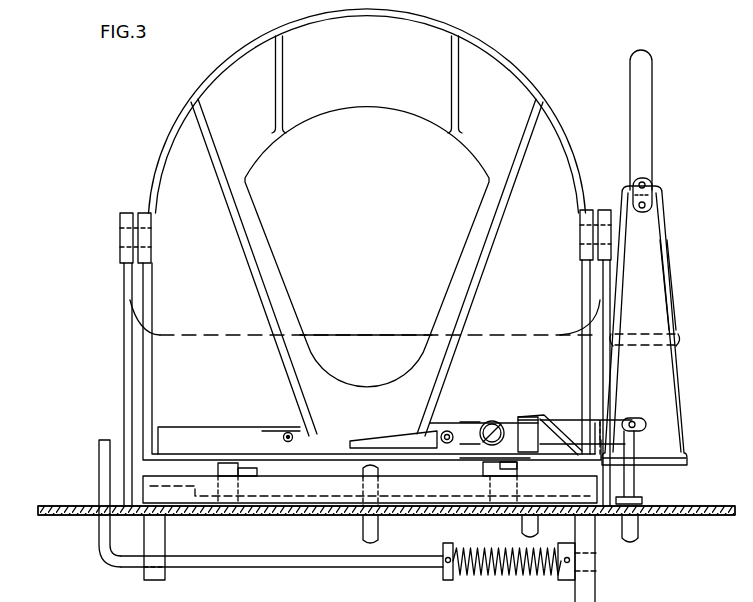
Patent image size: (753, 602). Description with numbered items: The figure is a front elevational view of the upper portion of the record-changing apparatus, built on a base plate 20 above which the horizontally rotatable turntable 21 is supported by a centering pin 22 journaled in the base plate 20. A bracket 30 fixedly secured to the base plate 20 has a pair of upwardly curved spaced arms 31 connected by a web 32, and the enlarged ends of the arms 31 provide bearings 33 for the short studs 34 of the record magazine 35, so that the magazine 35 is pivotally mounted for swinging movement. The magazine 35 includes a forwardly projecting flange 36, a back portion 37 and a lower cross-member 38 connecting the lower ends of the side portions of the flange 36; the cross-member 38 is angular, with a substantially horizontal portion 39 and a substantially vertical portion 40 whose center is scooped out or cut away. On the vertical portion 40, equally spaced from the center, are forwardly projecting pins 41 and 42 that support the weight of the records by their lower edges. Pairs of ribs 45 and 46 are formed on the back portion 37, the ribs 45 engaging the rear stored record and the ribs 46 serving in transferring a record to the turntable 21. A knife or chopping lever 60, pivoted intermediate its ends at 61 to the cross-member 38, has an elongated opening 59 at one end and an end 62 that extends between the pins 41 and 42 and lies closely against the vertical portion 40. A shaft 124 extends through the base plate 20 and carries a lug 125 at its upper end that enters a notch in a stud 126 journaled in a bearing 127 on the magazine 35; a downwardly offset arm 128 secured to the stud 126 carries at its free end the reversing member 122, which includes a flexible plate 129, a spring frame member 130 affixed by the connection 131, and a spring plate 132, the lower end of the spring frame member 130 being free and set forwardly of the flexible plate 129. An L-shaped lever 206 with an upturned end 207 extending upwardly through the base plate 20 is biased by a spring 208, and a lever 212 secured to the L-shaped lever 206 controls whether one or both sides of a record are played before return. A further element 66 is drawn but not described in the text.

The base plate 20 is at (670, 506).
The turntable 21 is at (300, 508).
The centering pin 22 is at (367, 518).
The bracket 30 is at (351, 383).
The arms 31 is at (133, 328).
The web 32 is at (372, 335).
The bearings 33 is at (351, 217).
The studs 34 is at (126, 238).
The record magazine 35 is at (513, 83).
The flange 36 is at (367, 111).
The back portion 37 is at (372, 96).
The cross-member 38 is at (210, 440).
The horizontal portion 39 is at (376, 426).
The vertical portion 40 is at (262, 431).
The pin 41 is at (294, 433).
The pin 42 is at (442, 432).
The ribs 45 is at (283, 78).
The ribs 46 is at (240, 233).
The elongated opening 59 is at (650, 421).
The knife lever 60 is at (572, 418).
The pivot 61 is at (494, 420).
The end of lever 62 is at (380, 440).
The base bracket 66 is at (370, 499).
The reversing member 122 is at (664, 276).
The shaft 124 is at (522, 525).
The lug 125 is at (537, 463).
The stud 126 is at (528, 417).
The bearing 127 is at (487, 460).
The arm 128 is at (549, 415).
The flexible plate 129 is at (645, 148).
The spring frame member 130 is at (660, 257).
The connection 131 is at (650, 192).
The spring plate 132 is at (668, 333).
The L-shaped lever 206 is at (250, 568).
The upturned end 207 is at (101, 460).
The spring 208 is at (524, 576).
The lever 212 is at (583, 601).